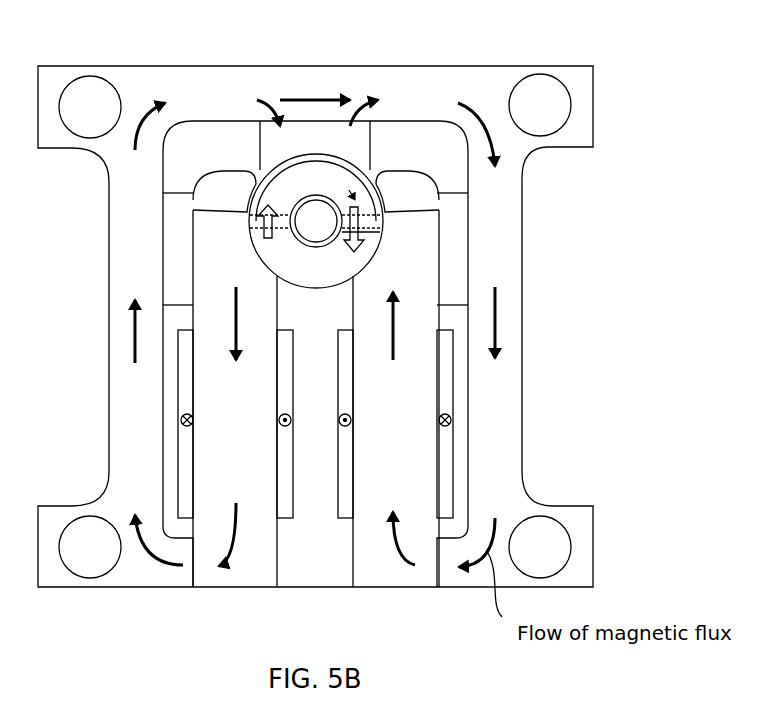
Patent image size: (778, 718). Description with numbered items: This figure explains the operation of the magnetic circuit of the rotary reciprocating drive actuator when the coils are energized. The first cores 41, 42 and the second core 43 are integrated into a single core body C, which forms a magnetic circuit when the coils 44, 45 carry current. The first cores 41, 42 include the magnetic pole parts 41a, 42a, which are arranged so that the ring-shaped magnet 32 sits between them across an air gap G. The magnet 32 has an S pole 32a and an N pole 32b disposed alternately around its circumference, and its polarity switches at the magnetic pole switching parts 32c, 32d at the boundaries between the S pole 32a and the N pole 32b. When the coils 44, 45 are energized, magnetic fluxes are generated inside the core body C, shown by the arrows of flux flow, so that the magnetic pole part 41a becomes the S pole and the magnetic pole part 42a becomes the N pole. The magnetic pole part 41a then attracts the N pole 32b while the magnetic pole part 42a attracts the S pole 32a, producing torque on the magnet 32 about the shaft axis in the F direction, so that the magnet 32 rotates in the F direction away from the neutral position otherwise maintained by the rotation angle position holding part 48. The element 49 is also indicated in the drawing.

The core body C is at (612, 88).
The magnet 32 is at (318, 285).
The S pole 32a is at (375, 172).
The N pole 32b is at (373, 230).
The magnetic pole switching part 32c is at (247, 223).
The magnetic pole switching part 32d is at (372, 222).
The first core 41 is at (217, 462).
The magnetic pole part 41a is at (230, 193).
The first core 42 is at (410, 470).
The magnetic pole part 42a is at (422, 203).
The second core 43 is at (497, 422).
The coil 44 is at (183, 370).
The coil 45 is at (445, 375).
The rotation angle position holding part 48 is at (288, 128).
The connecting portion 49 is at (170, 258).
The air gap G is at (350, 158).
The F direction F is at (311, 223).